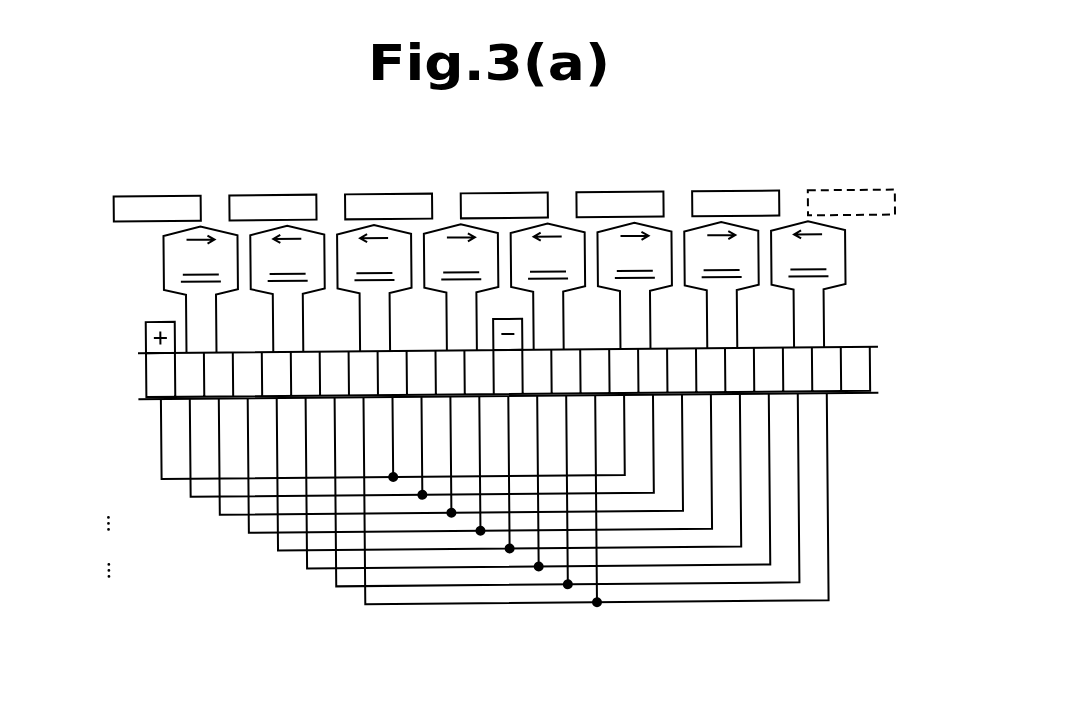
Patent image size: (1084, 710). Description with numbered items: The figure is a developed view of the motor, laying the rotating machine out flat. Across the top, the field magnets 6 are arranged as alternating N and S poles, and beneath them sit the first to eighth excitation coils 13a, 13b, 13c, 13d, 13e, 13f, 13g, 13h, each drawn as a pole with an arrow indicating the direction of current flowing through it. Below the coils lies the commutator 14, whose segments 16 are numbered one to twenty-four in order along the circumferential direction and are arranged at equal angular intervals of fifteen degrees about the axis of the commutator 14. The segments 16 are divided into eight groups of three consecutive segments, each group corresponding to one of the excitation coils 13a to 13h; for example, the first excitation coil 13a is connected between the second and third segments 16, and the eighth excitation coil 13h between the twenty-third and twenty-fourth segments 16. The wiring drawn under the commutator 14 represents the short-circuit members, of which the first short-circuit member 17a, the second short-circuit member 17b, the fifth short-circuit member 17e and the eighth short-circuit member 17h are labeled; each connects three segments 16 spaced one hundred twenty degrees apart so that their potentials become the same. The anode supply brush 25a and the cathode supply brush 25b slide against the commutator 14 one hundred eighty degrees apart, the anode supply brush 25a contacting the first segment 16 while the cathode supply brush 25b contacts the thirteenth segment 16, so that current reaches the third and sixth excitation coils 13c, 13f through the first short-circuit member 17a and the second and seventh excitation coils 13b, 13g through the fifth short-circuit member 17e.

The magnets 6 is at (188, 195).
The first excitation coil 13a is at (200, 289).
The second excitation coil 13b is at (287, 289).
The third excitation coil 13c is at (374, 288).
The fourth excitation coil 13d is at (461, 287).
The fifth excitation coil 13e is at (548, 286).
The sixth excitation coil 13f is at (634, 286).
The seventh excitation coil 13g is at (721, 285).
The eighth excitation coil 13h is at (808, 284).
The commutator 14 is at (877, 373).
The segments 16 is at (146, 376).
The first short-circuit member 17a is at (160, 470).
The second short-circuit member 17b is at (189, 488).
The fifth short-circuit member 17e is at (276, 546).
The eighth short-circuit member 17h is at (363, 598).
The anode supply brush 25a is at (146, 333).
The cathode supply brush 25b is at (493, 337).